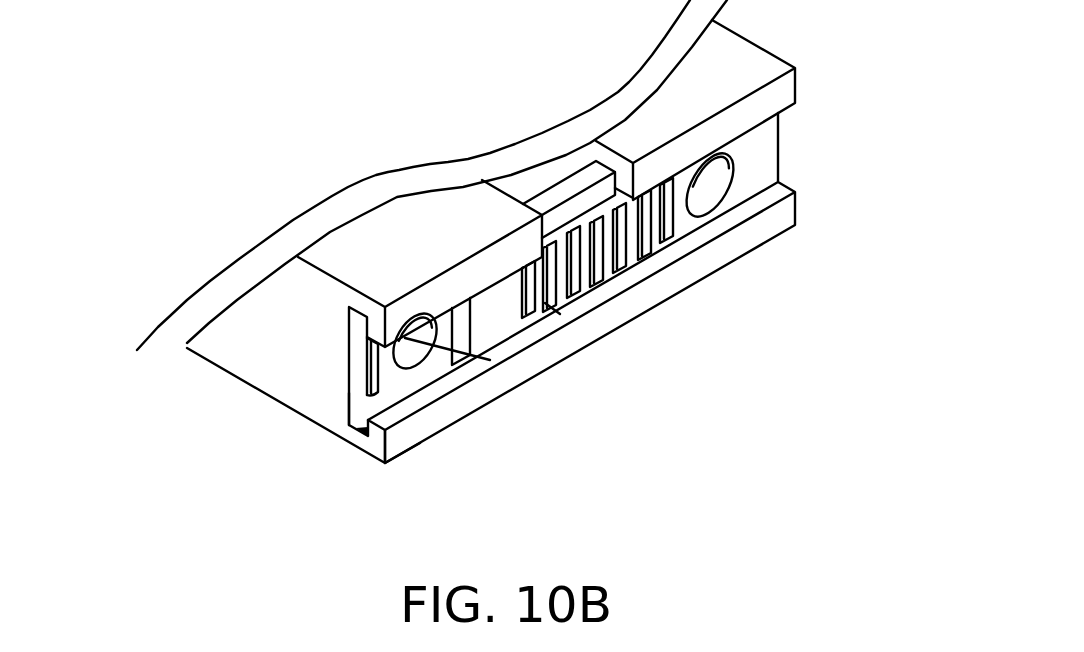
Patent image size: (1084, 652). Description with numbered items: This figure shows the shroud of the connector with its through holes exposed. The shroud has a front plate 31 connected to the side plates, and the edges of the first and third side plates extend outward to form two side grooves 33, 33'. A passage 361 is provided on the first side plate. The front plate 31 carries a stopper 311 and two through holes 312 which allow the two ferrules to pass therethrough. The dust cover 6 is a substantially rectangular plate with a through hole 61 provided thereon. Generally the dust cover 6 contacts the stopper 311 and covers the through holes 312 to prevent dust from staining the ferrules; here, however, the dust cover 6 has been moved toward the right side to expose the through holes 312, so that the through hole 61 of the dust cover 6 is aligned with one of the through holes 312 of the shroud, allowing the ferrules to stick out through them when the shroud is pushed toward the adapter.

The passage 361 is at (538, 177).
The side groove 33 is at (215, 371).
The side groove 33' is at (268, 411).
The stopper 311 is at (349, 393).
The front plate 31 is at (397, 383).
The through hole 312 is at (460, 350).
The through hole 61 is at (808, 237).
The dust cover 6 is at (545, 303).